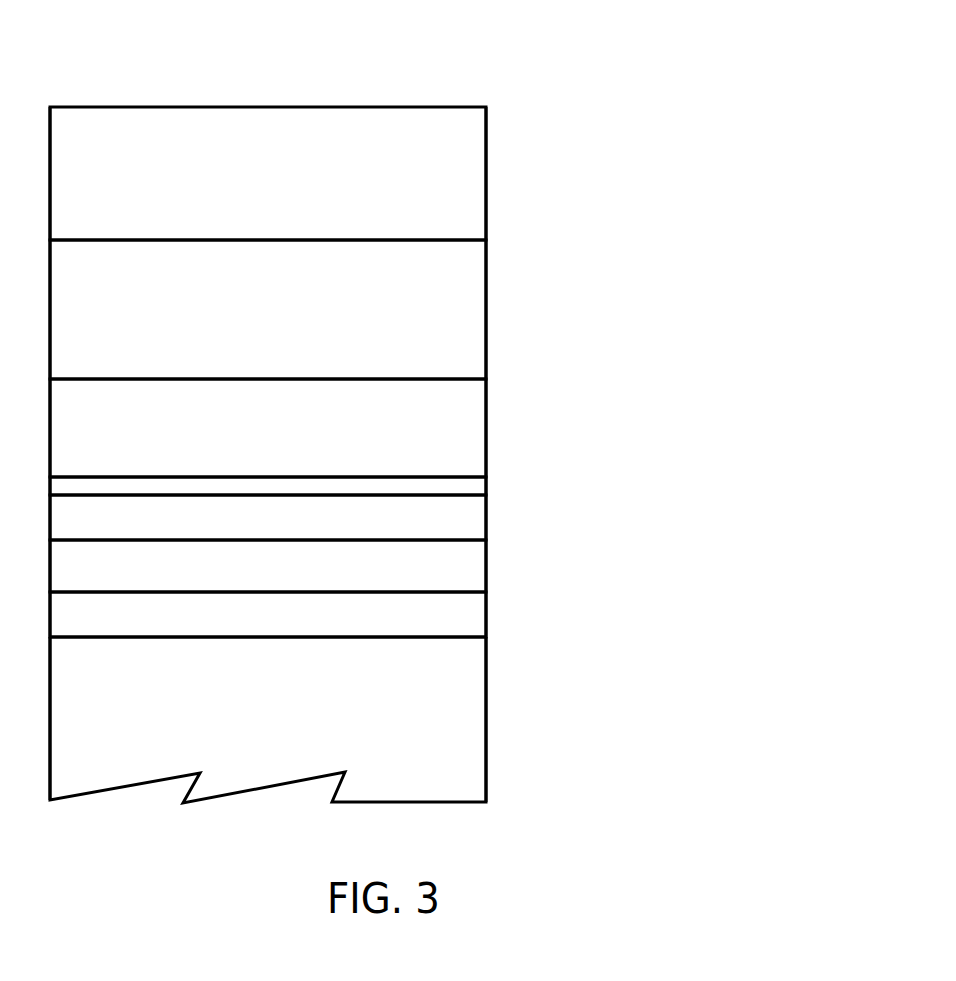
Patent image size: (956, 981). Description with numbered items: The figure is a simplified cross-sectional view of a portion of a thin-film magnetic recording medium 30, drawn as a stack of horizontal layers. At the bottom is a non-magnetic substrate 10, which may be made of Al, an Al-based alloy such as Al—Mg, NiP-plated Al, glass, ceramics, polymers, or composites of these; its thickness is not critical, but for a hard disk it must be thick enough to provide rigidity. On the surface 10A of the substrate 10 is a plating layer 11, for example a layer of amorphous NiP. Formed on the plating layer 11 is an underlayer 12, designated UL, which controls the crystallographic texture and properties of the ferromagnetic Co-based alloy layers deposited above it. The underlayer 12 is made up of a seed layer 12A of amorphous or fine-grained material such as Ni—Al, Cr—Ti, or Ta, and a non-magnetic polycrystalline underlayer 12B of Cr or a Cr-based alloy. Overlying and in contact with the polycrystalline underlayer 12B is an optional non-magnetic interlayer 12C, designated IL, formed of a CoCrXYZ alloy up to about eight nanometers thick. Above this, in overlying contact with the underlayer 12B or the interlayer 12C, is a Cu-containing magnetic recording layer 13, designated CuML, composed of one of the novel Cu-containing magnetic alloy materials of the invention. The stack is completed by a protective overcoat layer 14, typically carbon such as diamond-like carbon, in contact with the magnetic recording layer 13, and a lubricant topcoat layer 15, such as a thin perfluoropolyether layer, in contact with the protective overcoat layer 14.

The thin-film magnetic recording medium 30 is at (381, 84).
The lubricant topcoat layer 15 is at (488, 172).
The protective overcoat layer 14 is at (488, 303).
The Cu-containing magnetic recording layer 13 is at (488, 418).
The interlayer 12C is at (488, 485).
The polycrystalline underlayer 12B is at (488, 522).
The seed layer 12A is at (488, 563).
The underlayer 12 is at (442, 543).
The plating layer 11 is at (488, 615).
The surface 10A is at (442, 637).
The non-magnetic substrate 10 is at (488, 732).